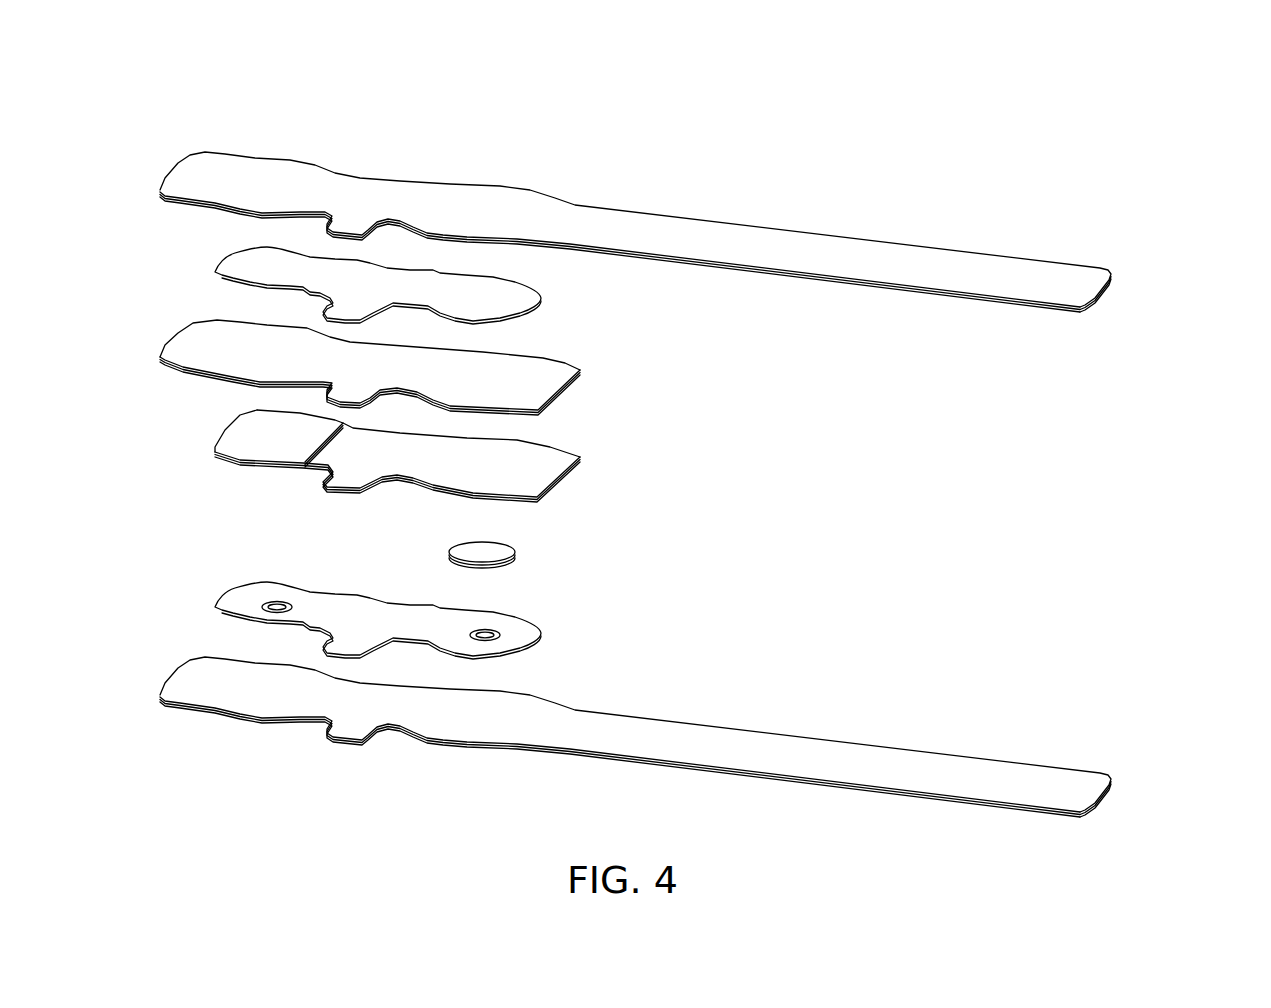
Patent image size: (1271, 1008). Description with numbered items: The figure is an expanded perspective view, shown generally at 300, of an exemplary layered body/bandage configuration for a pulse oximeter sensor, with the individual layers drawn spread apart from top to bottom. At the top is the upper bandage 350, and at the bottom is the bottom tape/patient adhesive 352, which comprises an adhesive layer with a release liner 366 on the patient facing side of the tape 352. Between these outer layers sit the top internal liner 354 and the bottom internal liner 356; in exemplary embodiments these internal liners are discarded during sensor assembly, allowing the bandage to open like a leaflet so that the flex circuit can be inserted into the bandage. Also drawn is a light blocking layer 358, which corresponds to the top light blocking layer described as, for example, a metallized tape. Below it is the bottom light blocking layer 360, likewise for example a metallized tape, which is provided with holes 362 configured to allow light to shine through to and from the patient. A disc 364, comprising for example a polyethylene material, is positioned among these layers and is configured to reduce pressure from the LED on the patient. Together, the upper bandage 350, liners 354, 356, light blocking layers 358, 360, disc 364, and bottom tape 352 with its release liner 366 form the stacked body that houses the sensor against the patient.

The layered body/bandage configuration 300 is at (180, 116).
The upper bandage 350 is at (745, 240).
The bottom tape/patient adhesive 352 is at (635, 737).
The top internal liner 354 is at (540, 377).
The bottom internal liner 356 is at (540, 470).
The insulating layer 358 is at (520, 298).
The bottom light blocking layer 360 is at (525, 638).
The holes 362 is at (278, 602).
The disc 364 is at (517, 552).
The release liner 366 is at (248, 739).